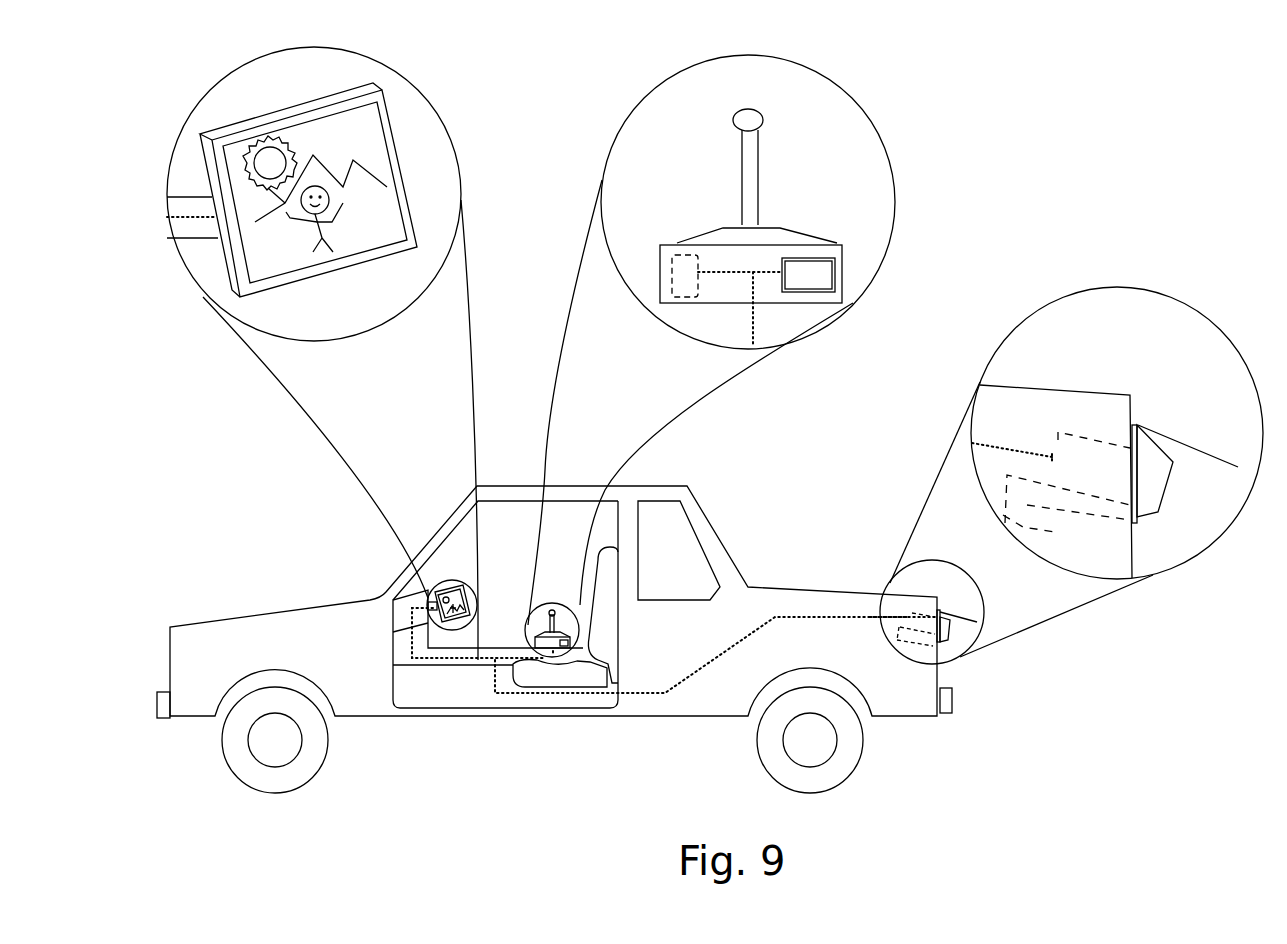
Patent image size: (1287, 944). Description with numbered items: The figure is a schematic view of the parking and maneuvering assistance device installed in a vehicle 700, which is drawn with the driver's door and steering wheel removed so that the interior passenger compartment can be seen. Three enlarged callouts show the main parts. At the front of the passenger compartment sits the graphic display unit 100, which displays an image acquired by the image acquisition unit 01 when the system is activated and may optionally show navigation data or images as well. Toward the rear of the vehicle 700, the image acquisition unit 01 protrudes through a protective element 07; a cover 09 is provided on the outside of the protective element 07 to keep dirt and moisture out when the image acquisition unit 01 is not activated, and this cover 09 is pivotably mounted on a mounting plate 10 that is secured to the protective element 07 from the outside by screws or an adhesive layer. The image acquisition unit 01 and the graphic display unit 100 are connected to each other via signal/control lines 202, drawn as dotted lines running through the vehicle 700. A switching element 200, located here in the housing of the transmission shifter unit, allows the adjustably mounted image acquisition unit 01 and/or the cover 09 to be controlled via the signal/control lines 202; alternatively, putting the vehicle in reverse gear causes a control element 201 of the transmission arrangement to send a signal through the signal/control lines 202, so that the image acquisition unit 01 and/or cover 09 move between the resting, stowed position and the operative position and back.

The vehicle 700 is at (300, 543).
The graphic display unit 100 is at (300, 103).
The control element 201 is at (683, 277).
The switching element 200 is at (835, 262).
The signal/control lines 202 is at (190, 218).
The image acquisition unit 01 is at (1077, 450).
The protective element 07 is at (1132, 408).
The cover 09 is at (1208, 450).
The mounting plate 10 is at (1138, 515).